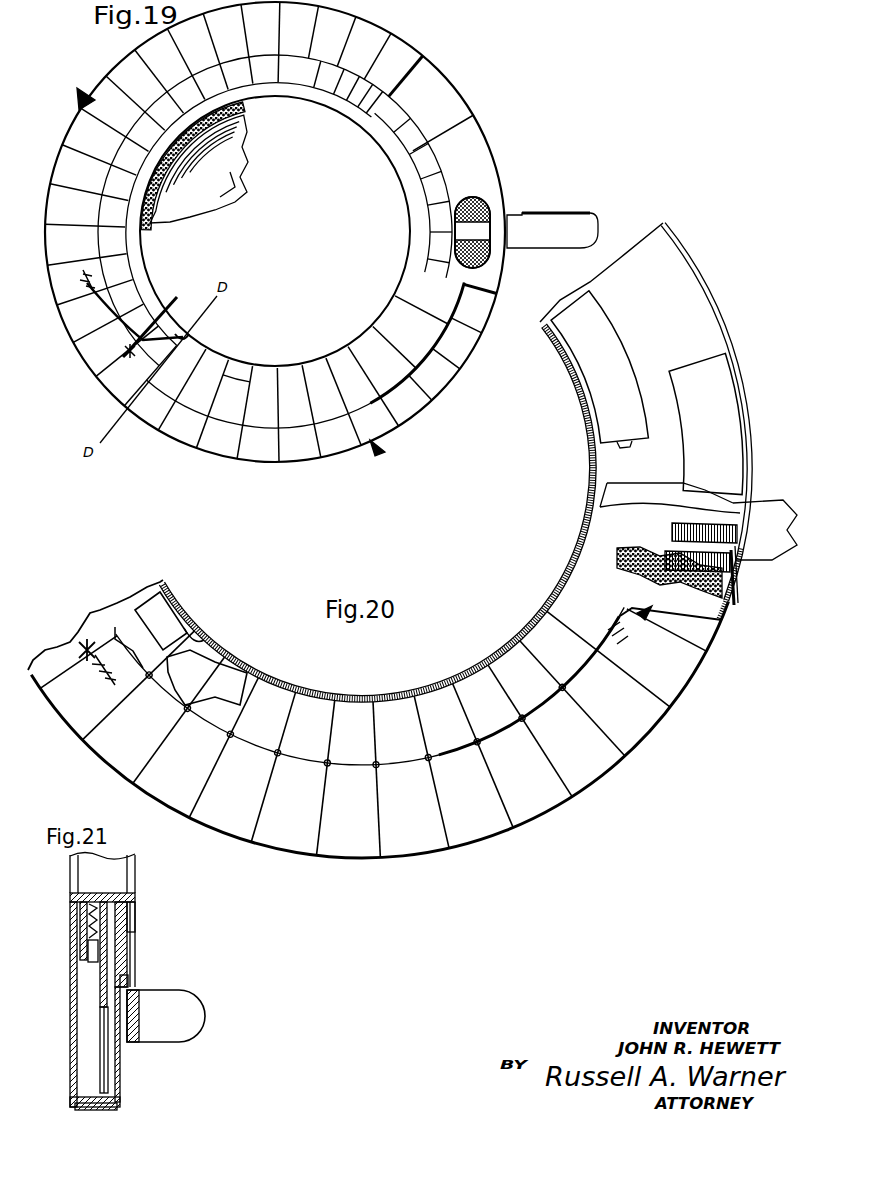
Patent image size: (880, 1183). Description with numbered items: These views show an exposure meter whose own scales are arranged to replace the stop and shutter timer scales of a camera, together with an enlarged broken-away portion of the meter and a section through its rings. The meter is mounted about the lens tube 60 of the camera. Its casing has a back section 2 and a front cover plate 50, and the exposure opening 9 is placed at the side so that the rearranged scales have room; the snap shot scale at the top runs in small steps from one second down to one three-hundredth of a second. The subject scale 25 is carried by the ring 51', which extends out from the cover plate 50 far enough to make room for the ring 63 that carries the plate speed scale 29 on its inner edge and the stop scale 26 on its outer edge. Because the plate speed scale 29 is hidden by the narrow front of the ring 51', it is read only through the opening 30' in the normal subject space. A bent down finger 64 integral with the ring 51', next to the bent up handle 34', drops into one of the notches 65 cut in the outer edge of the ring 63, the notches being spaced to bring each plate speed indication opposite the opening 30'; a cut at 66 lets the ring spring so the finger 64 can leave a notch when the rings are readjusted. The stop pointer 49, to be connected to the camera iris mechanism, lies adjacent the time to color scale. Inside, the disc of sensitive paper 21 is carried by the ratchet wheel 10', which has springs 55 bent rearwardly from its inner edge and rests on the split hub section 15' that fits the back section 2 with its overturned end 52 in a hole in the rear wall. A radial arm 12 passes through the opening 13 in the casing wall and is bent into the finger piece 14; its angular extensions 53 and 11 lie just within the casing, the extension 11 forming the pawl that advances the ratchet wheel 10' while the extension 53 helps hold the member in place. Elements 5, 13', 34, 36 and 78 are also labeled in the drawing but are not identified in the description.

In FIG. 20, the back section of the casing 2 is at (646, 412).
In FIG. 21, the retaining tab 5 is at (82, 1115).
In FIG. 19, the exposure opening 9 is at (488, 223).
In FIG. 20, the ratchet wheel 10' is at (377, 513).
In FIG. 21, the ratchet wheel 10' is at (71, 954).
In FIG. 20, the pawl extension 11 is at (751, 575).
In FIG. 20, the radial arm 12 is at (670, 491).
In FIG. 20, the opening in outer casing wall 13 is at (721, 567).
In FIG. 20, the flap 13' is at (734, 530).
In FIG. 19, the finger piece 14 is at (552, 221).
In FIG. 20, the split hub section 15' is at (594, 367).
In FIG. 21, the split hub section 15' is at (68, 955).
In FIG. 20, the disc of sensitive paper 21 is at (669, 561).
In FIG. 21, the disc of sensitive paper 21 is at (74, 1050).
In FIG. 19, the subject scale 25 is at (290, 373).
In FIG. 19, the stop scale 26 is at (189, 159).
In FIG. 20, the plate speed scale 29 is at (393, 684).
In FIG. 19, the opening in ring 30' is at (249, 358).
In FIG. 19, the time scale 34 is at (314, 383).
In FIG. 20, the time scale 34 is at (373, 758).
In FIG. 21, the bent up handle 34' is at (185, 1016).
In FIG. 19, the index arrow 36 is at (68, 99).
In FIG. 19, the stop pointer 49 is at (384, 453).
In FIG. 19, the cover plate 50 is at (280, 232).
In FIG. 20, the cover plate 50 is at (390, 703).
In FIG. 21, the cover plate 50 is at (115, 980).
In FIG. 19, the ring carrying subject scale 51' is at (160, 314).
In FIG. 20, the ring carrying subject scale 51' is at (172, 616).
In FIG. 21, the ring carrying subject scale 51' is at (152, 917).
In FIG. 20, the overturned end 52 is at (620, 457).
In FIG. 20, the angular extension 53 is at (704, 415).
In FIG. 21, the springs 55 is at (68, 931).
In FIG. 19, the lens tube 60 is at (225, 169).
In FIG. 19, the adjustable ring 63 is at (411, 258).
In FIG. 20, the adjustable ring 63 is at (433, 673).
In FIG. 21, the adjustable ring 63 is at (147, 944).
In FIG. 21, the bent down finger 64 is at (155, 977).
In FIG. 19, the notches 65 is at (141, 314).
In FIG. 20, the notches 65 is at (95, 629).
In FIG. 19, the cut in ring 66 is at (201, 329).
In FIG. 20, the cut in ring 66 is at (207, 655).
In FIG. 19, the speckled band 78 is at (193, 179).